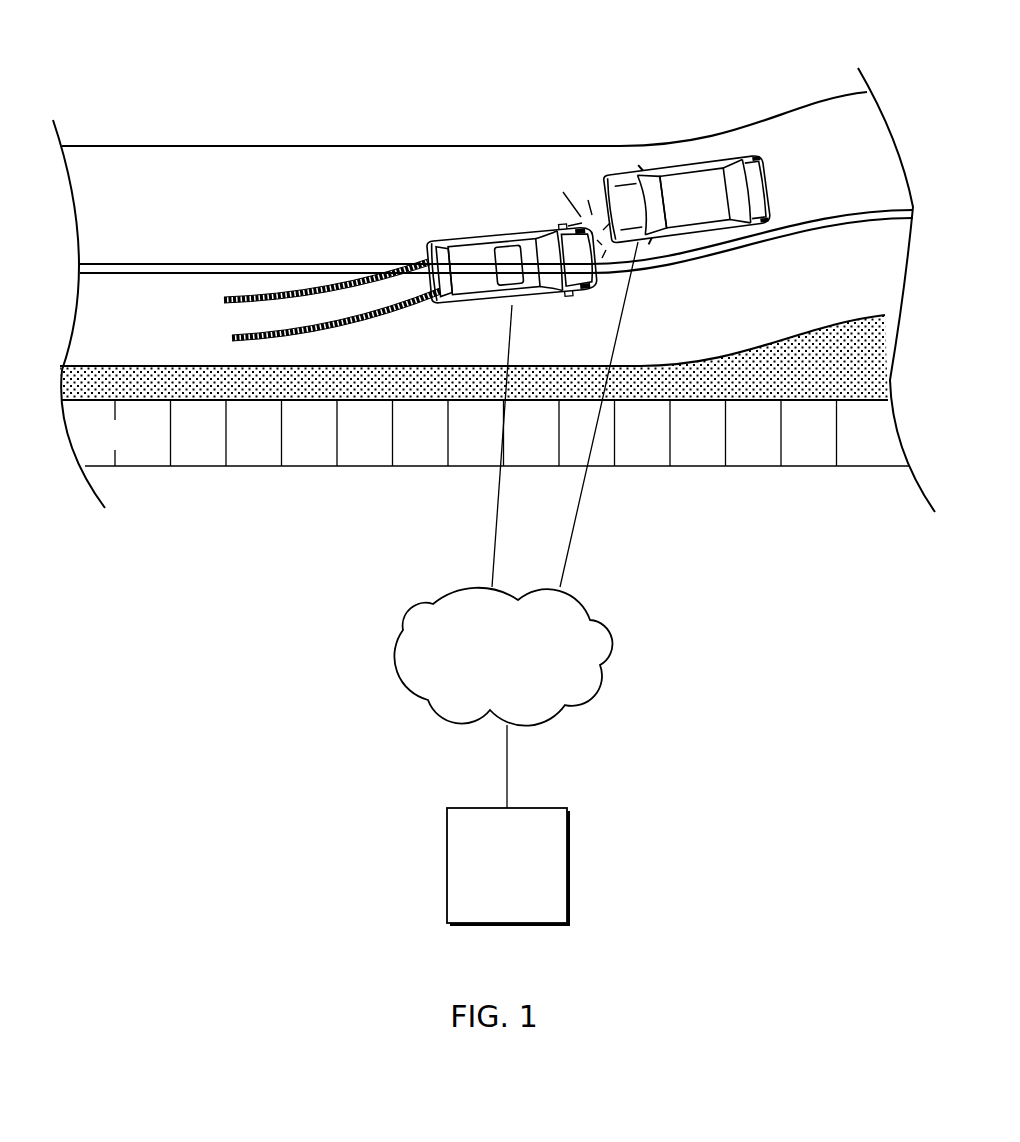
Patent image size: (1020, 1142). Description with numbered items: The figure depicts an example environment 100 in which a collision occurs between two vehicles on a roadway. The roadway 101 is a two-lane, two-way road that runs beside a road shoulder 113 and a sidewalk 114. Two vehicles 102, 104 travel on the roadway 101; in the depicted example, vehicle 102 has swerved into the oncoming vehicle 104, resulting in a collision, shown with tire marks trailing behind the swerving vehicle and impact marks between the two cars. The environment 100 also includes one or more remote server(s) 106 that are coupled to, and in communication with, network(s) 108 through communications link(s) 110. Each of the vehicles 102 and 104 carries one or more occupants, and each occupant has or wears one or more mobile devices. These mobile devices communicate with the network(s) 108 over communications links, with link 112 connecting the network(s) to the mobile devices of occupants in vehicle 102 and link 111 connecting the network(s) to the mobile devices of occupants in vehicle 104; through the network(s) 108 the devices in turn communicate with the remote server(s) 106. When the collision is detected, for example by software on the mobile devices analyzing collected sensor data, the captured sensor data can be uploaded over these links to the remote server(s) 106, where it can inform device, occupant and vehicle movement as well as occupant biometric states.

The environment 100 is at (192, 91).
The roadway 101 is at (162, 229).
The vehicle 102 is at (482, 238).
The vehicle 104 is at (626, 182).
The remote server(s) 106 is at (485, 908).
The network(s) 108 is at (527, 690).
The communications link(s) 110 is at (509, 766).
The communications link 111 is at (575, 522).
The communications link 112 is at (497, 518).
The road shoulder 113 is at (68, 392).
The sidewalk 114 is at (157, 445).